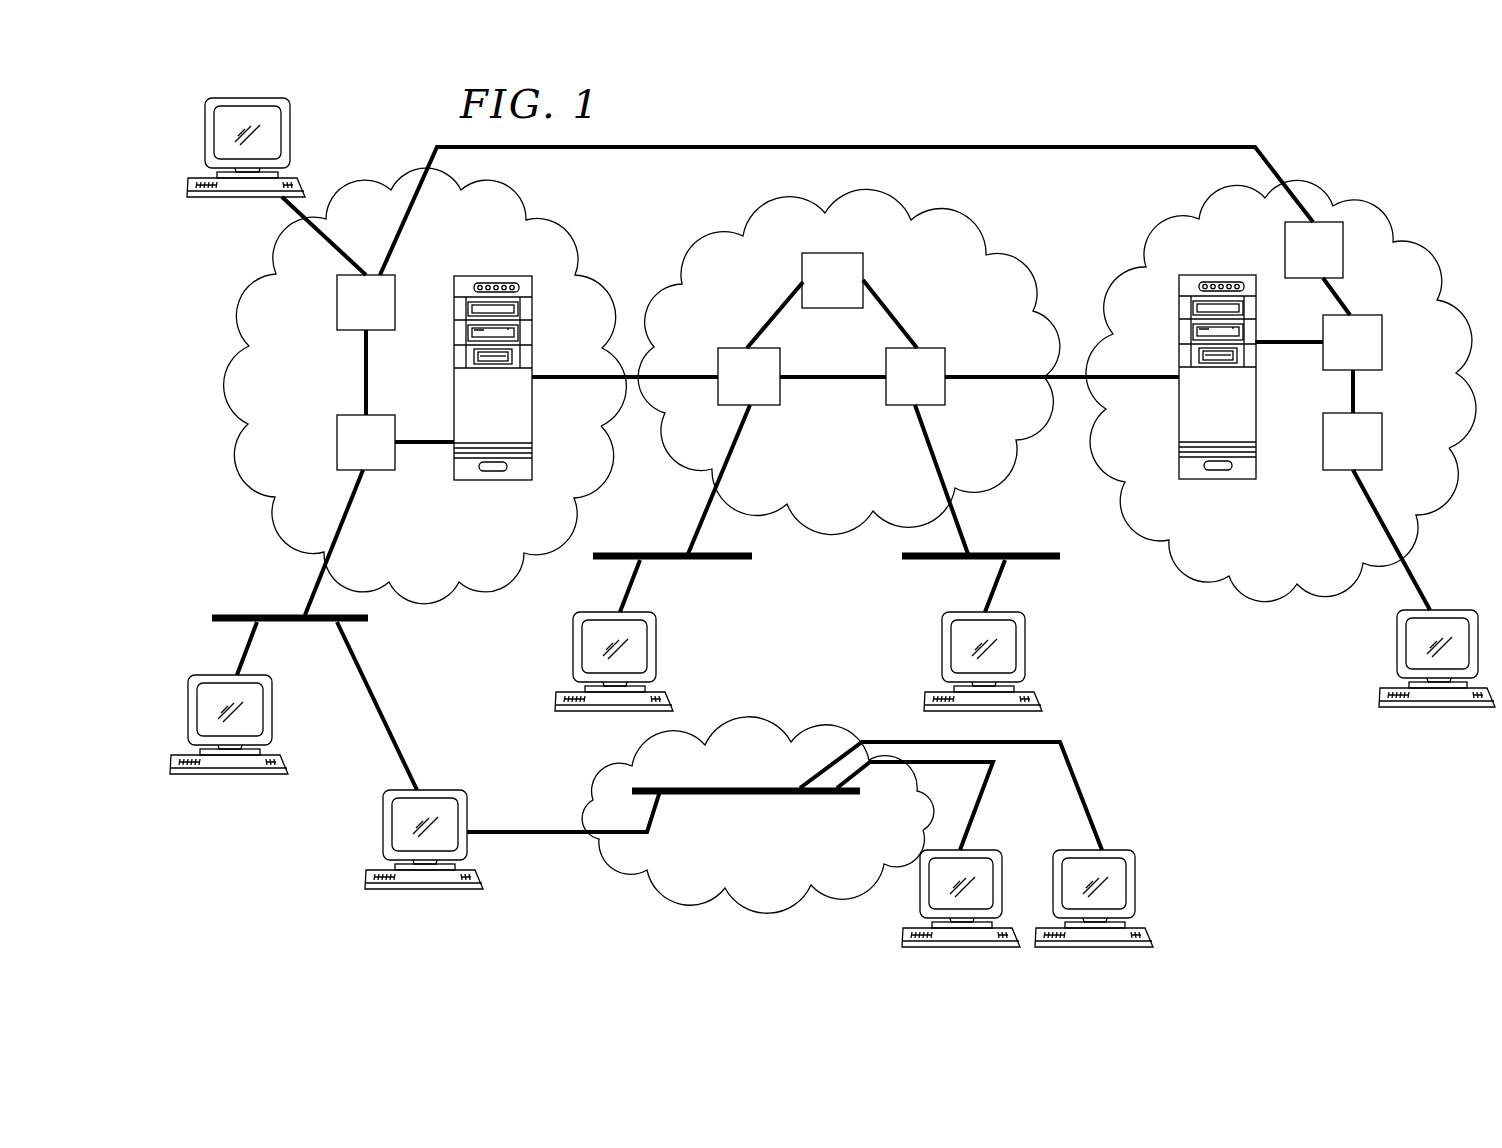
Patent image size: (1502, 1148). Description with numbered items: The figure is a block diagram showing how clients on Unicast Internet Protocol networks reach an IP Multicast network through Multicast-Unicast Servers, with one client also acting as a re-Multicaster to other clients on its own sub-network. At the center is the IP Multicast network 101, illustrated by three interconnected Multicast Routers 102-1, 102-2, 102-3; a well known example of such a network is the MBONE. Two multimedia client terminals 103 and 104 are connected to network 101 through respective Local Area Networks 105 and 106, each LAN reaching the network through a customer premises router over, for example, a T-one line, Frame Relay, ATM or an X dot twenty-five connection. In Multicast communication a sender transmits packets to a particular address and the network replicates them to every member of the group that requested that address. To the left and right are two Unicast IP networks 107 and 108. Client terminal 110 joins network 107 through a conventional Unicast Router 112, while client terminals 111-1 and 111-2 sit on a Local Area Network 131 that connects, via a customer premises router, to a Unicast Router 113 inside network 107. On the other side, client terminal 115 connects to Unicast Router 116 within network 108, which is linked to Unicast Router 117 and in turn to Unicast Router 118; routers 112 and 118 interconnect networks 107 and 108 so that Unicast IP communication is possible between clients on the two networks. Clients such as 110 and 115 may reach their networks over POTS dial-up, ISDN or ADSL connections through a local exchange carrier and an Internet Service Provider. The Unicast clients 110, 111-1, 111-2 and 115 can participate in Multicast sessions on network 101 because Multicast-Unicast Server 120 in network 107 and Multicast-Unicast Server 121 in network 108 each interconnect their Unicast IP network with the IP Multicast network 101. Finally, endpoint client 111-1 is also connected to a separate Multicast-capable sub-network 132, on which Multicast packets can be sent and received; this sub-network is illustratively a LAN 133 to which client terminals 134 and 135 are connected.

The IP Multicast network 101 is at (820, 512).
The Multicast Router 102-1 is at (738, 348).
The Multicast Router 102-2 is at (863, 286).
The Multicast Router 102-3 is at (932, 330).
The client terminal 103 is at (656, 633).
The client terminal 104 is at (1026, 643).
The Local Area Network 105 is at (666, 553).
The Local Area Network 106 is at (1024, 553).
The Unicast IP network 107 is at (466, 592).
The Unicast IP network 108 is at (1262, 586).
The client terminal 110 is at (213, 140).
The client terminal 111-1 is at (440, 790).
The client terminal 111-2 is at (262, 706).
The Unicast Router 112 is at (337, 302).
The Unicast Router 113 is at (337, 425).
The client terminal 115 is at (1462, 612).
The Unicast Router 116 is at (1382, 416).
The Unicast Router 117 is at (1323, 364).
The Unicast Router 118 is at (1285, 262).
The Multicast-Unicast Server 120 is at (486, 276).
The Multicast-Unicast Server 121 is at (1220, 276).
The Local Area Network 131 is at (272, 614).
The Multicast-capable sub-network 132 is at (774, 742).
The LAN 133 is at (695, 788).
The client terminal 134 is at (996, 860).
The client terminal 135 is at (1124, 858).